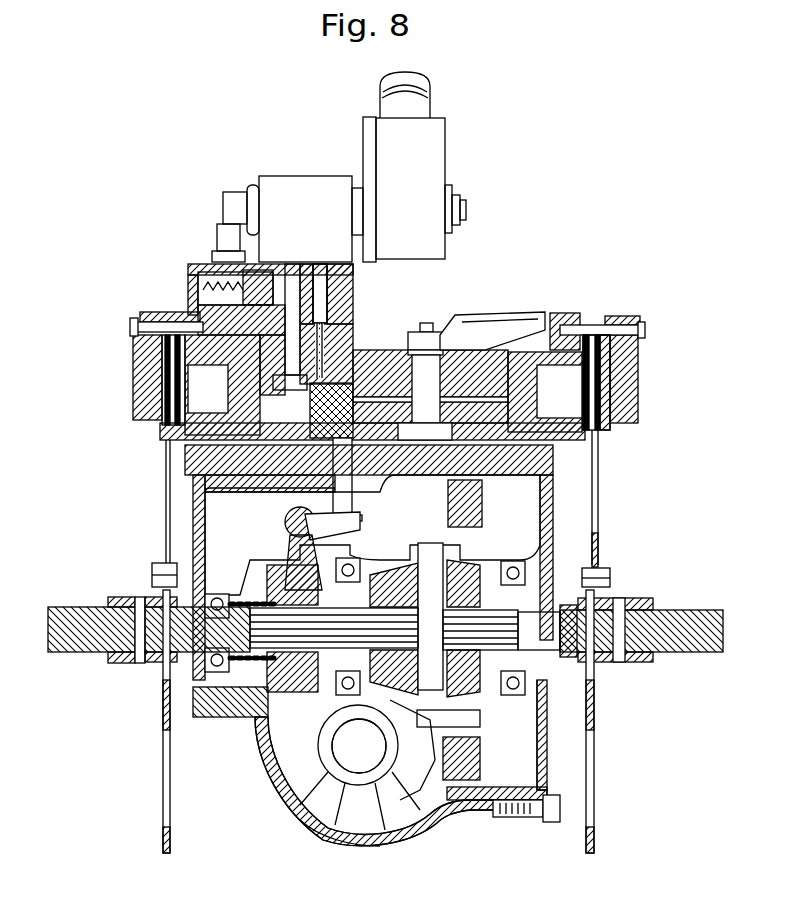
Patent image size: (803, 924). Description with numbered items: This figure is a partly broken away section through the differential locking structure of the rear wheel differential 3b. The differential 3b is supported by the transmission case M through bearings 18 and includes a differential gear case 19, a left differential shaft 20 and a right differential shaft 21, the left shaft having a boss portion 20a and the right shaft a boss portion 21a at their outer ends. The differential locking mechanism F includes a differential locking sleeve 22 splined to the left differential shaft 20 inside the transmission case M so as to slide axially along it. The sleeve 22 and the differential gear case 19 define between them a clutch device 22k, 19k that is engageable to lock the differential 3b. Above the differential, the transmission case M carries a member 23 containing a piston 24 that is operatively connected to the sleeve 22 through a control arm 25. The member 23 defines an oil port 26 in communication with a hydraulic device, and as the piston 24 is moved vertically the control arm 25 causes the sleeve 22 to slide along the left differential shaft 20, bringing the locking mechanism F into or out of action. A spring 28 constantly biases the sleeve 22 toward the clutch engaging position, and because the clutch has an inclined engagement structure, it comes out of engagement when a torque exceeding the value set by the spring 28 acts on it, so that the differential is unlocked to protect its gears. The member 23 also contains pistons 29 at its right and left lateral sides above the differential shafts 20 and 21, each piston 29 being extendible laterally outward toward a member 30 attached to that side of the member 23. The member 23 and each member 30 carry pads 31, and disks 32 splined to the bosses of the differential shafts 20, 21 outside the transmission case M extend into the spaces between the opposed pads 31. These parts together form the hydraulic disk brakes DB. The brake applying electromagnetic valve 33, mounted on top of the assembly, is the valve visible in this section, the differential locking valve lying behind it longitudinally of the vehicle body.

The brake applying electromagnetic valve 33 is at (295, 176).
The oil port 26 is at (313, 312).
The member 23 is at (380, 308).
The piston 24 is at (343, 395).
The pistons 29 is at (548, 315).
The pads 31 is at (178, 318).
The member 30 is at (145, 388).
The hydraulic disk brakes DB is at (116, 329).
The disks 32 is at (165, 530).
The differential locking mechanism F is at (232, 569).
The control arm 25 is at (278, 545).
The differential gear case 19 is at (400, 542).
The bearings 18 is at (505, 540).
The left axle shaft 20a is at (113, 666).
The left differential shaft 20 is at (160, 706).
The right axle shaft 21a is at (640, 664).
The right differential shaft 21 is at (575, 682).
The spring 28 is at (220, 705).
The differential locking sleeve 22 is at (258, 718).
The clutch device 22k is at (296, 720).
The clutch device 19k is at (342, 760).
The differential 3b is at (410, 741).
The transmission case M is at (330, 846).